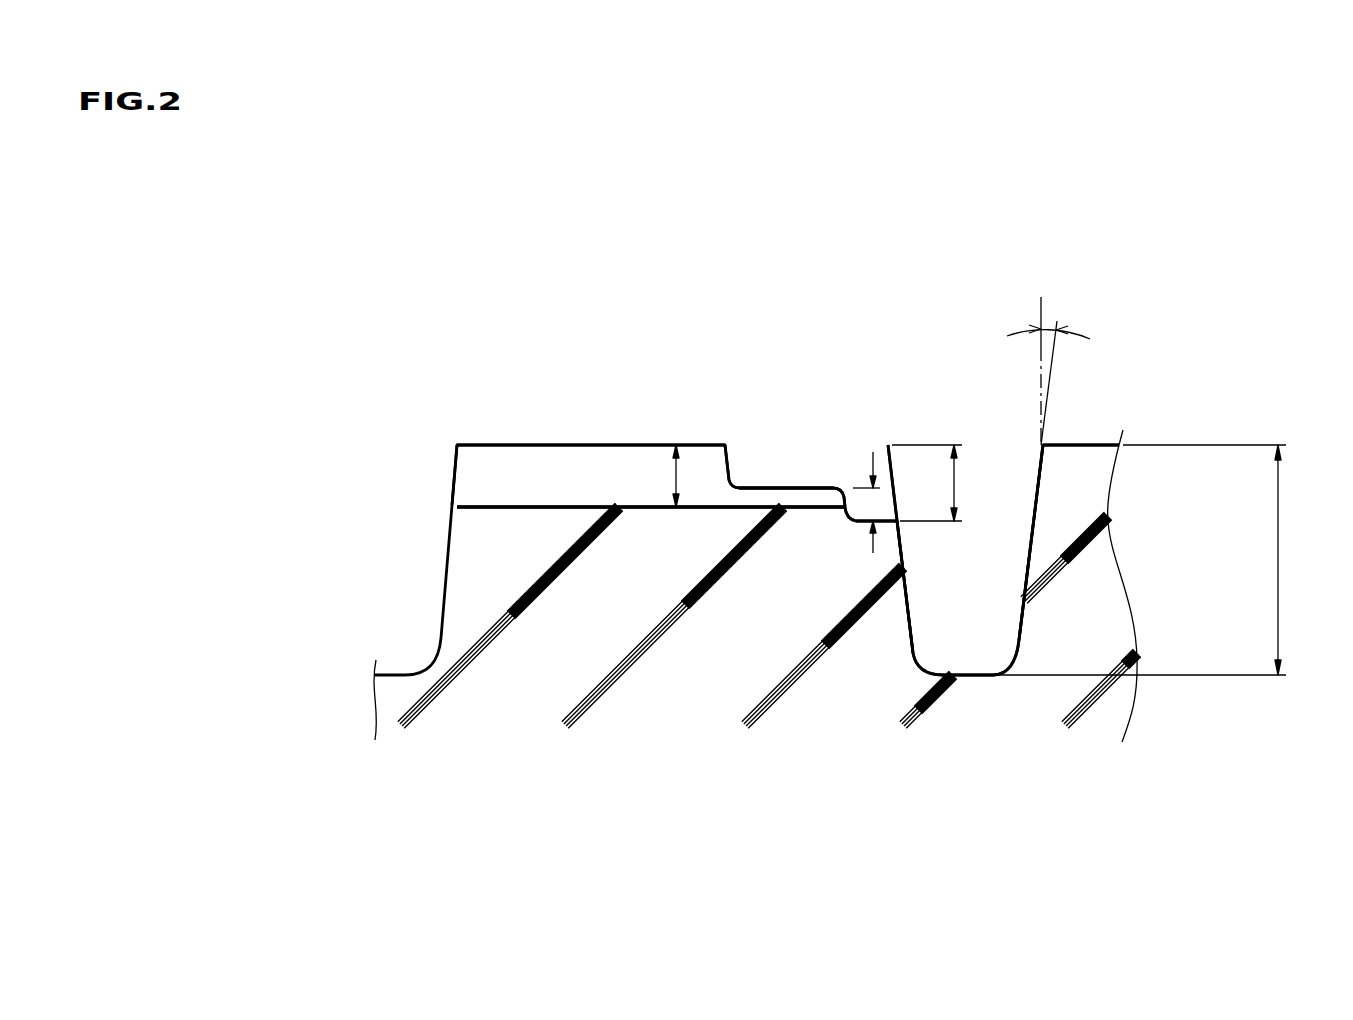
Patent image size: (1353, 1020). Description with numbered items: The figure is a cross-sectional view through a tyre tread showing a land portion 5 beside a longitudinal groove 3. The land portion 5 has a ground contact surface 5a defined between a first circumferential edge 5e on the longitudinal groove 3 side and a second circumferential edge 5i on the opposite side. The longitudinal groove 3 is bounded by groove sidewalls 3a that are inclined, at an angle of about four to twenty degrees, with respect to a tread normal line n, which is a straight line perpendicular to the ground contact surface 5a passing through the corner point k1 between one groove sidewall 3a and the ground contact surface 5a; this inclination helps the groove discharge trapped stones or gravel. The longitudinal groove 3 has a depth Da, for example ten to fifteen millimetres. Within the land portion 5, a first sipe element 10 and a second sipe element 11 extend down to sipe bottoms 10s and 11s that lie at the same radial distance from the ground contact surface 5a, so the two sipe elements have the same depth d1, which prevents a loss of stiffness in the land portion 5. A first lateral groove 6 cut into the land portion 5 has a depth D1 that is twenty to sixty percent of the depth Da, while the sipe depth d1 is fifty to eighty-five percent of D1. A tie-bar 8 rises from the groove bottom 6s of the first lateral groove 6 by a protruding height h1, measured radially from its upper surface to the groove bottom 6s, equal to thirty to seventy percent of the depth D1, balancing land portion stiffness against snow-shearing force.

The land portion 5 is at (580, 298).
The second circumferential edge 5i is at (456, 443).
The ground contact surface 5a is at (527, 443).
The first circumferential edge 5e is at (889, 444).
The first sipe element 10 is at (617, 481).
The sipe bottom of first sipe element 10s is at (592, 503).
The first lateral groove 6 is at (753, 462).
The tie-bar 8 is at (789, 487).
The second sipe element 11 is at (813, 498).
The sipe bottom of second sipe element 11s is at (794, 503).
The groove bottom of first lateral groove 6s is at (895, 515).
The longitudinal groove 3 is at (957, 628).
The groove sidewall 3a is at (1034, 546).
The tread normal line n is at (1038, 311).
The corner point k1 is at (1042, 443).
The depth of first sipe element d1 is at (674, 470).
The protruding height of tie-bar h1 is at (872, 503).
The depth of first lateral groove D1 is at (944, 483).
The depth of longitudinal groove Da is at (1158, 560).